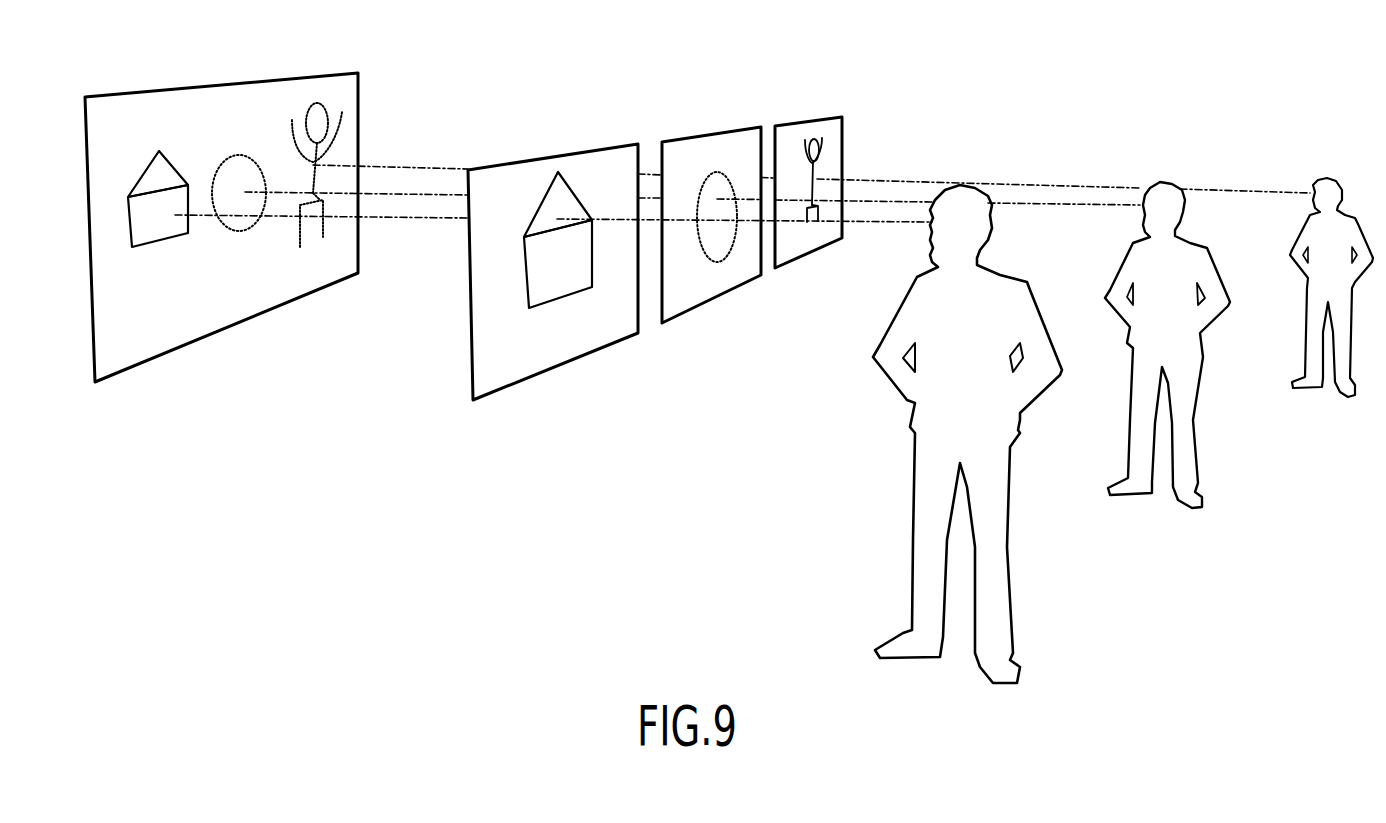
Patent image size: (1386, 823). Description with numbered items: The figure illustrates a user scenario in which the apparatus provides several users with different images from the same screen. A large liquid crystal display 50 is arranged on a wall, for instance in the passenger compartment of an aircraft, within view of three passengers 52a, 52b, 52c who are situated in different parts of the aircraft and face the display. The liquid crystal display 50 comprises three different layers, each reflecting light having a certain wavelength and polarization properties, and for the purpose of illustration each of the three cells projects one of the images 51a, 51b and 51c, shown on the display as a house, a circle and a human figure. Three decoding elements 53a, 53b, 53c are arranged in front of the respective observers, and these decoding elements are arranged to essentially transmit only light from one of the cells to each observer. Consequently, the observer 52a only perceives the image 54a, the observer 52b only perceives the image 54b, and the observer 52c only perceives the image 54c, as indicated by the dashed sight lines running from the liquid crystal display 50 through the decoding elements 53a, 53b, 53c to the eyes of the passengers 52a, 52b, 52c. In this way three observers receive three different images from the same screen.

The liquid crystal display 50 is at (358, 103).
The image 51a is at (122, 225).
The image 51b is at (233, 233).
The image 51c is at (333, 140).
The decoding element 53a is at (555, 153).
The decoding element 53b is at (705, 133).
The decoding element 53c is at (818, 117).
The image 54a is at (520, 293).
The image 54b is at (703, 265).
The image 54c is at (825, 167).
The passenger 52a is at (967, 445).
The passenger 52b is at (1167, 359).
The passenger 52c is at (1331, 303).